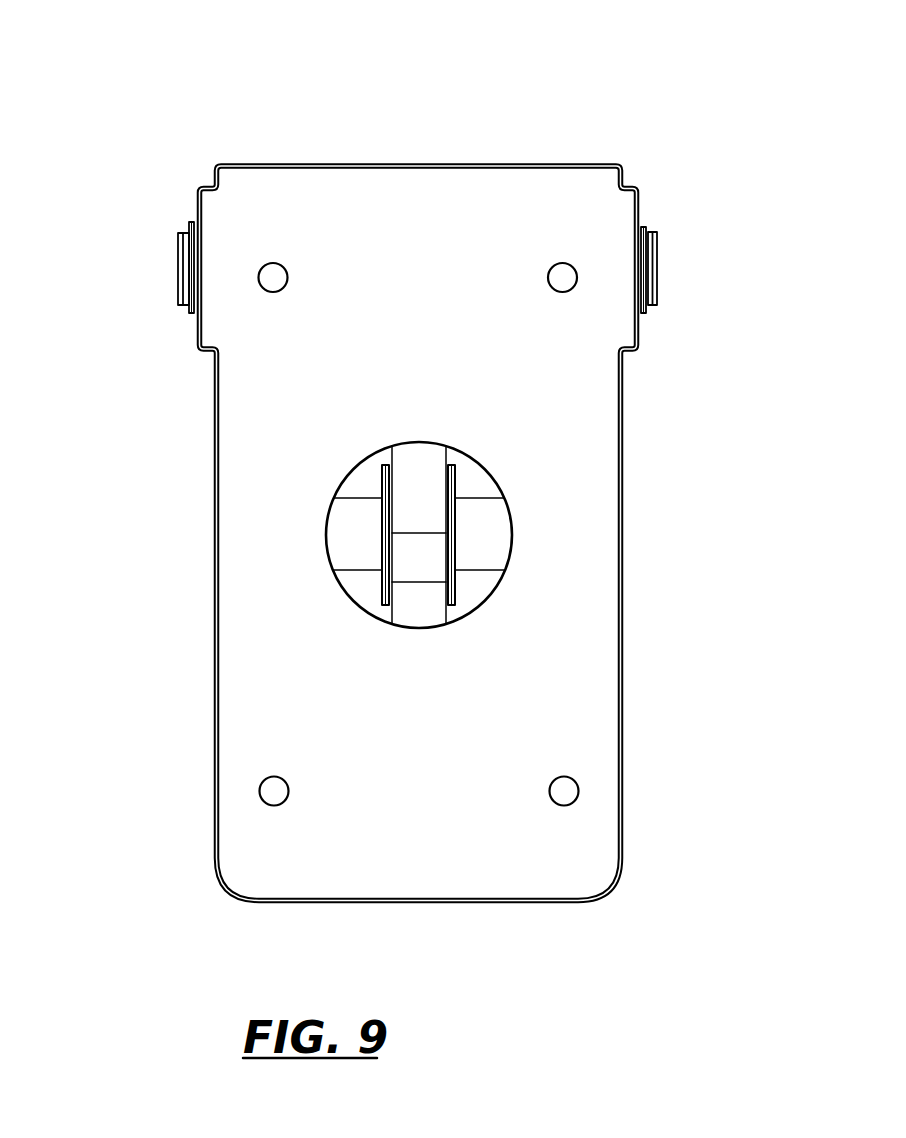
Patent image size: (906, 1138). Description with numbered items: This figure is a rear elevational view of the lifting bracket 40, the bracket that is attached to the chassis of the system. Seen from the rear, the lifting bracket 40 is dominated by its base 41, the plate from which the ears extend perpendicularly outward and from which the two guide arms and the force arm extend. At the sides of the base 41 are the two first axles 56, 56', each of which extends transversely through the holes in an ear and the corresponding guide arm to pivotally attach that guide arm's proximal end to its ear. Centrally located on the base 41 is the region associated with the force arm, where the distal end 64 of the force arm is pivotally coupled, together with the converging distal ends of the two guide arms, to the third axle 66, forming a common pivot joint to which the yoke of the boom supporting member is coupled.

The lifting bracket 40 is at (188, 80).
The base 41 is at (525, 168).
The first axle 56 is at (708, 253).
The first axle 56' is at (120, 260).
The distal end of the force arm 64 is at (423, 445).
The third axle 66 is at (345, 507).